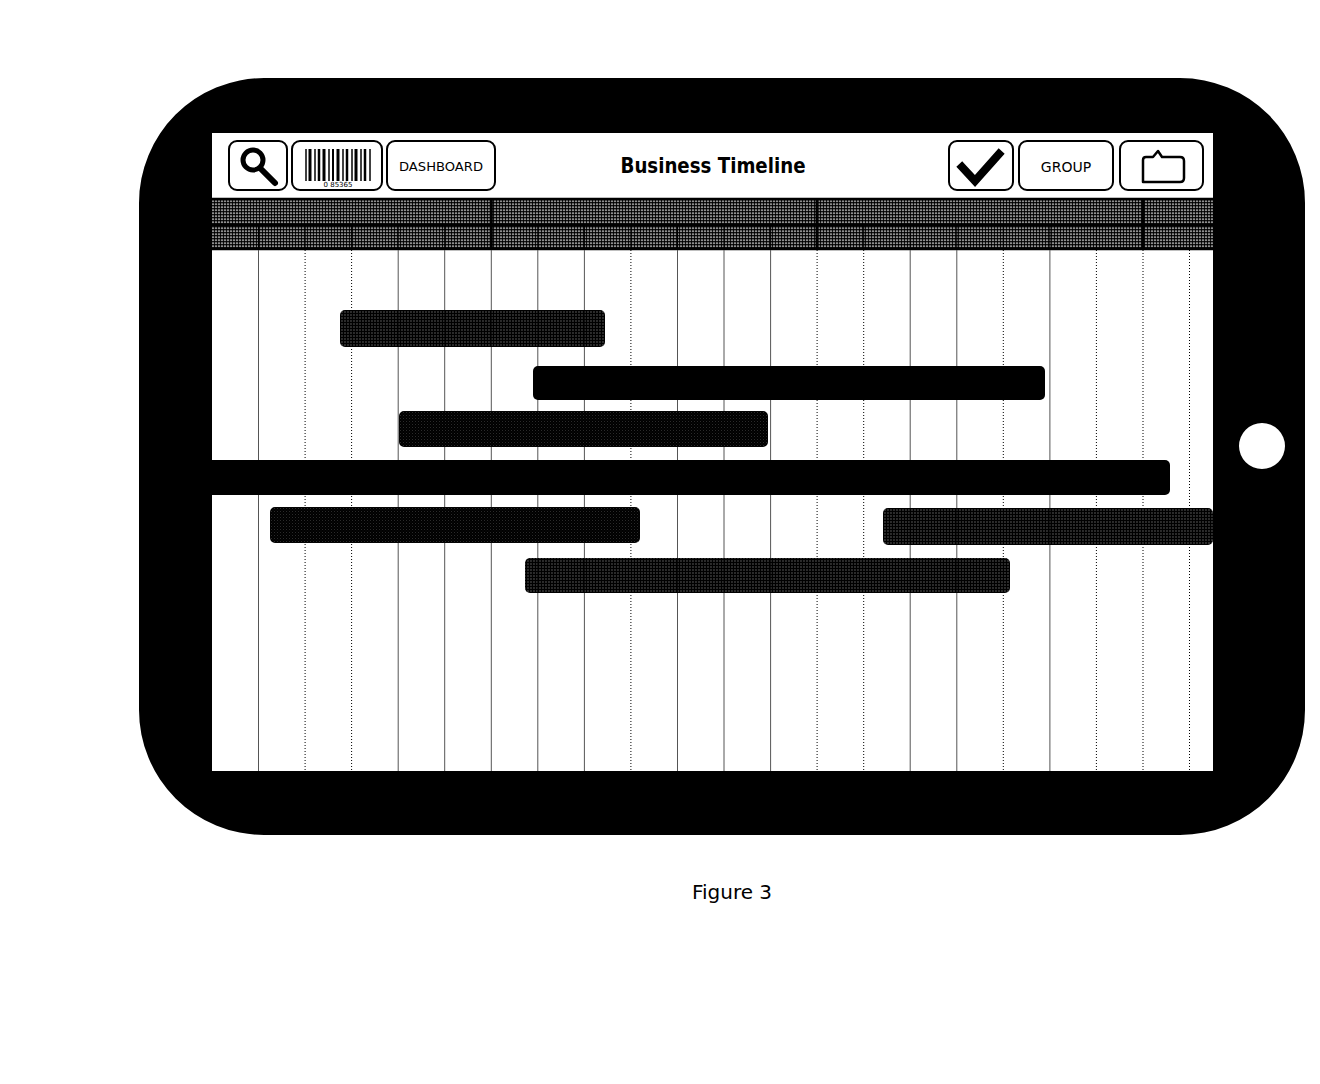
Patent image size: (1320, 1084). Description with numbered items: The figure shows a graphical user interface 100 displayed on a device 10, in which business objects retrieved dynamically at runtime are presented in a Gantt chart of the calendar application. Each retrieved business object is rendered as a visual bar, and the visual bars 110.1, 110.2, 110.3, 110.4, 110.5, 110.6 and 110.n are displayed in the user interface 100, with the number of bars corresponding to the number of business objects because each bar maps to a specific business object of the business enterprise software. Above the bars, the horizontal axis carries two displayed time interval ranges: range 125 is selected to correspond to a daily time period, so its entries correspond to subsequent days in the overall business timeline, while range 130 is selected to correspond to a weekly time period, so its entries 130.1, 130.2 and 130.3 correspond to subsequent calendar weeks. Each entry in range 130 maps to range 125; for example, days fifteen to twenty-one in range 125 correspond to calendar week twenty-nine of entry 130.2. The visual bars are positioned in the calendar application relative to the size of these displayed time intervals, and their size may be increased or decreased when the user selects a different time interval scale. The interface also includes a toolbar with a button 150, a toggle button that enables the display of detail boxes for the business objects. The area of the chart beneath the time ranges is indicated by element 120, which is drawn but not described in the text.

The device 10 is at (1290, 776).
The graphical user interface 100 is at (712, 452).
The visual bar 110.1 is at (442, 328).
The visual bar 110.2 is at (758, 383).
The visual bar 110.3 is at (617, 429).
The visual bar 110.4 is at (1042, 526).
The visual bar 110.5 is at (693, 462).
The visual bar 110.6 is at (485, 525).
The visual bar 110.n is at (800, 575).
The time grid 120 is at (724, 510).
The displayed time interval range 125 is at (712, 246).
The displayed time interval range 130 is at (712, 212).
The entry in time range 130.1 is at (395, 224).
The entry in time range 130.2 is at (715, 224).
The entry in time range 130.3 is at (1036, 224).
The button 150 is at (1161, 165).